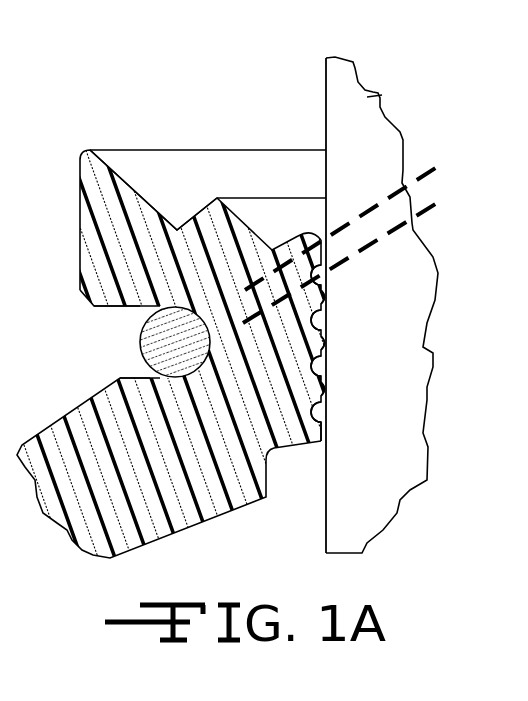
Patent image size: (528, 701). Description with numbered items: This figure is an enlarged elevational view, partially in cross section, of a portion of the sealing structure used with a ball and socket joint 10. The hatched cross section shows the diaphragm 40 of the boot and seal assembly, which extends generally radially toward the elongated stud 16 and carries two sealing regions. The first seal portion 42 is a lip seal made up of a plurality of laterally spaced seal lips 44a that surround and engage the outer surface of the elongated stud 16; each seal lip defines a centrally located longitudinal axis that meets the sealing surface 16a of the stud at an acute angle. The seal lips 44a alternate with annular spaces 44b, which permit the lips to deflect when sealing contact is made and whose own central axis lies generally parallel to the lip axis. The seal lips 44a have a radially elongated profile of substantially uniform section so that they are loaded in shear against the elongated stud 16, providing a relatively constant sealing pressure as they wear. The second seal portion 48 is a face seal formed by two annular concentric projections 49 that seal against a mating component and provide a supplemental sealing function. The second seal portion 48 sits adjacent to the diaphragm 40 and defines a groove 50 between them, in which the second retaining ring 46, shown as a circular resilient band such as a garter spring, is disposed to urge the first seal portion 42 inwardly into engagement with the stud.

The ball and socket joint 10 is at (0, 78).
The elongated stud 16 is at (380, 96).
The sealing surface 16a is at (325, 207).
The diaphragm 40 is at (104, 548).
The first seal portion 42 is at (410, 368).
The seal lips 44a is at (328, 250).
The annular spaces 44b is at (330, 280).
The second retaining ring 46 is at (137, 343).
The second seal portion 48 is at (180, 140).
The annular concentric projections 49 is at (120, 157).
The groove 50 is at (115, 314).